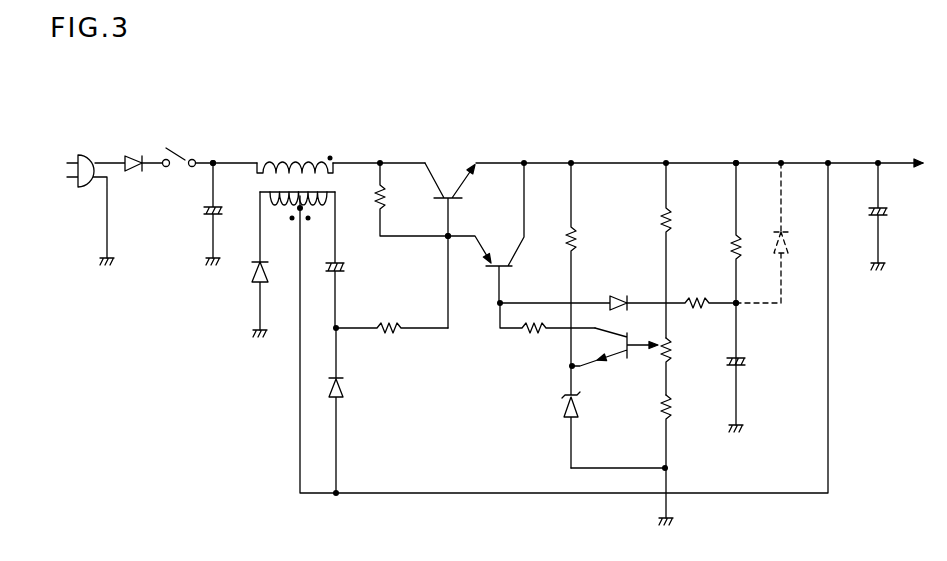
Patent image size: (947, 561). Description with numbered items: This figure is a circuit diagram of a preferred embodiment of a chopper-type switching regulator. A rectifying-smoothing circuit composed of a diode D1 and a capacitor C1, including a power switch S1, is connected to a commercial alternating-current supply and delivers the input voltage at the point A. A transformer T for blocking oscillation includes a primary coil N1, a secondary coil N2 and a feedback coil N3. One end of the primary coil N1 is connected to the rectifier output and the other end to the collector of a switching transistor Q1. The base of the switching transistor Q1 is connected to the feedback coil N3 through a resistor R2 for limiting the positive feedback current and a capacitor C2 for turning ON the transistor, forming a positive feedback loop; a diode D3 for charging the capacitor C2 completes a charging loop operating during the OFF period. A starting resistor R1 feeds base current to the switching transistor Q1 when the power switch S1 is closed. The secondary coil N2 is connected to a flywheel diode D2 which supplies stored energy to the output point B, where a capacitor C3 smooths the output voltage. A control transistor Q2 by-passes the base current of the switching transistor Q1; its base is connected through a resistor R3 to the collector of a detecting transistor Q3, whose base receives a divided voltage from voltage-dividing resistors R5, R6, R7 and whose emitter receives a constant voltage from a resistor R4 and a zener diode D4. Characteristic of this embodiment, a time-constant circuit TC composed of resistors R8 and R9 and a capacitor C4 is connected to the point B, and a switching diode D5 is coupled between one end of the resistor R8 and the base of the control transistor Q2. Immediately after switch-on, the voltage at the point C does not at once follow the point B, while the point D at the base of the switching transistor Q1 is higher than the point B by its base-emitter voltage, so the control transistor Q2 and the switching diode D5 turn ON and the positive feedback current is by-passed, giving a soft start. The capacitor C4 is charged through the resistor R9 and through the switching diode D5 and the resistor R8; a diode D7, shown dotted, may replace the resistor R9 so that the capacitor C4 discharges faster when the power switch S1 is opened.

The power switch S1 is at (188, 149).
The input point A is at (214, 162).
The diode D1 is at (128, 179).
The capacitor C1 is at (209, 214).
The primary coil N1 is at (295, 155).
The transformer T is at (313, 184).
The secondary coil N2 is at (284, 217).
The feedback coil N3 is at (315, 217).
The flywheel diode D2 is at (248, 264).
The capacitor C2 is at (332, 260).
The switching transistor Q1 is at (450, 192).
The starting resistor R1 is at (411, 199).
The control transistor Q2 is at (486, 233).
The point D is at (447, 238).
The resistor R2 is at (392, 316).
The resistor R3 is at (547, 332).
The resistor R4 is at (584, 264).
The diode D3 is at (350, 410).
The zener diode D4 is at (556, 417).
The detecting transistor Q3 is at (615, 348).
The switching diode D5 is at (566, 291).
The voltage-dividing resistor R5 is at (680, 250).
The voltage-dividing resistor R6 is at (677, 366).
The voltage-dividing resistor R7 is at (677, 460).
The resistor R8 is at (681, 291).
The resistor R9 is at (749, 233).
The diode D7 is at (776, 233).
The output point B is at (739, 162).
The point C is at (735, 305).
The time-constant circuit TC is at (742, 329).
The capacitor C4 is at (748, 393).
The capacitor C3 is at (893, 216).